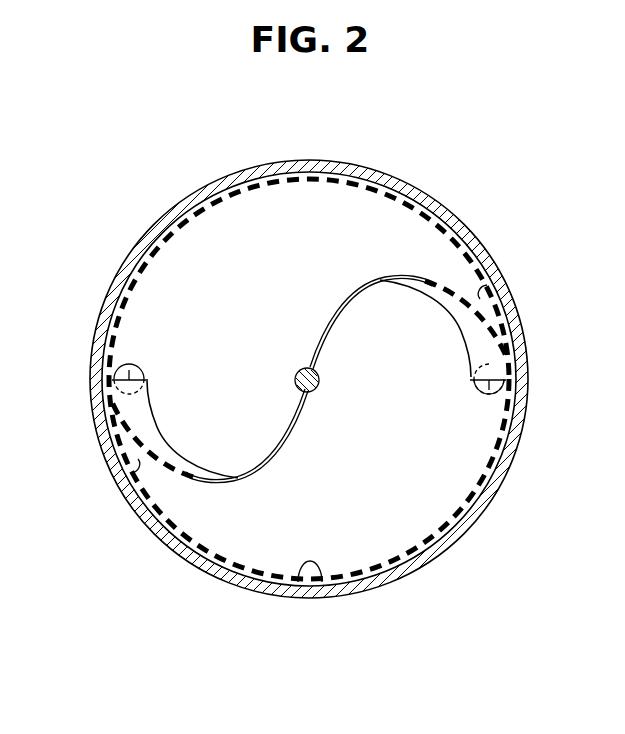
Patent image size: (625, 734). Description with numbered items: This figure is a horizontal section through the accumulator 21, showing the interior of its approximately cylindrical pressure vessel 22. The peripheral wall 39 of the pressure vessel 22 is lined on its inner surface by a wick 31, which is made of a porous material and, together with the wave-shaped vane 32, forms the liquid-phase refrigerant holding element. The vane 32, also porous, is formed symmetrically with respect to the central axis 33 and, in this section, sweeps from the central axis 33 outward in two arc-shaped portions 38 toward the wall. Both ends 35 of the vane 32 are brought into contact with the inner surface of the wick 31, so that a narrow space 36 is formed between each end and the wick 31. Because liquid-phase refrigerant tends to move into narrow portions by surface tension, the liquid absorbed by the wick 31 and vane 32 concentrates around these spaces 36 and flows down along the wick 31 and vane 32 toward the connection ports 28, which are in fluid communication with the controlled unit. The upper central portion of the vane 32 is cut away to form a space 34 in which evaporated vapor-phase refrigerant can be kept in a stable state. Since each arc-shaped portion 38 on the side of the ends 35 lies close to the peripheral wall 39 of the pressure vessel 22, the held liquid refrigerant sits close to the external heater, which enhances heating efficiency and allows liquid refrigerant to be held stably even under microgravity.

The accumulator 21 is at (456, 170).
The pressure vessel 22 is at (378, 170).
The connection port 28 is at (510, 418).
The wick 31 is at (320, 580).
The vane 32 is at (436, 278).
The central axis 33 is at (320, 383).
The space 34 is at (262, 393).
The ends of the vane 35 is at (497, 309).
The narrow space 36 is at (481, 278).
The arc-shaped portion 38 is at (500, 332).
The peripheral wall 39 is at (448, 540).